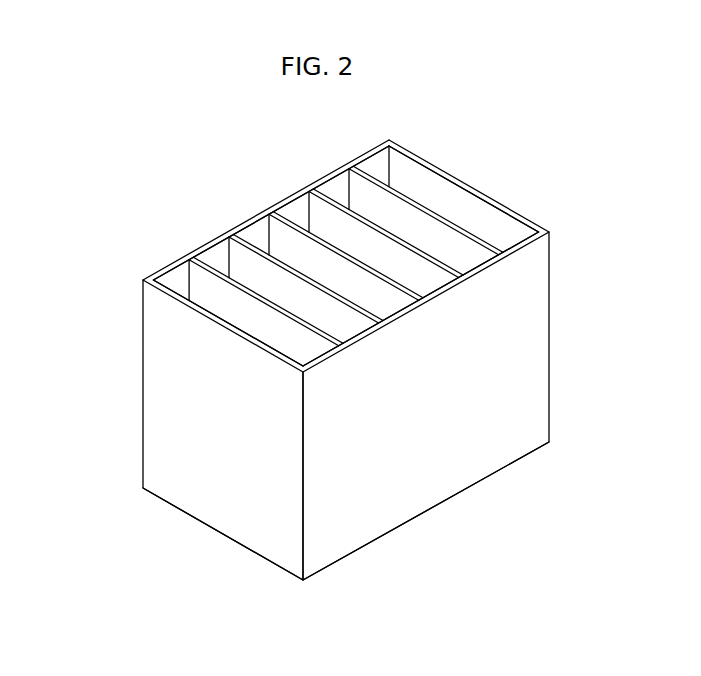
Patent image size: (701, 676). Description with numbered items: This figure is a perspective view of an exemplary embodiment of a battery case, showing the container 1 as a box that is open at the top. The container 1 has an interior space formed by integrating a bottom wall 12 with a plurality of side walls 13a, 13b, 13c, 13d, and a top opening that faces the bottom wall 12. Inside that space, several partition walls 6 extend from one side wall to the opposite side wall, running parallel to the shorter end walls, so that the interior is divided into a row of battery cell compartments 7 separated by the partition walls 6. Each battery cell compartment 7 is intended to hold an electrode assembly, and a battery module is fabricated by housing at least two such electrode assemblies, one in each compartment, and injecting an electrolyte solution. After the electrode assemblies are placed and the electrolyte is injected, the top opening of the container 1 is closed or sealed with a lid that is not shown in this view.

The container 1 is at (145, 354).
The partition wall 6 is at (408, 198).
The battery cell compartment 7 is at (332, 184).
The bottom wall 12 is at (273, 567).
The side wall 13a is at (445, 492).
The side wall 13b is at (160, 268).
The side wall 13c is at (497, 200).
The side wall 13d is at (203, 510).